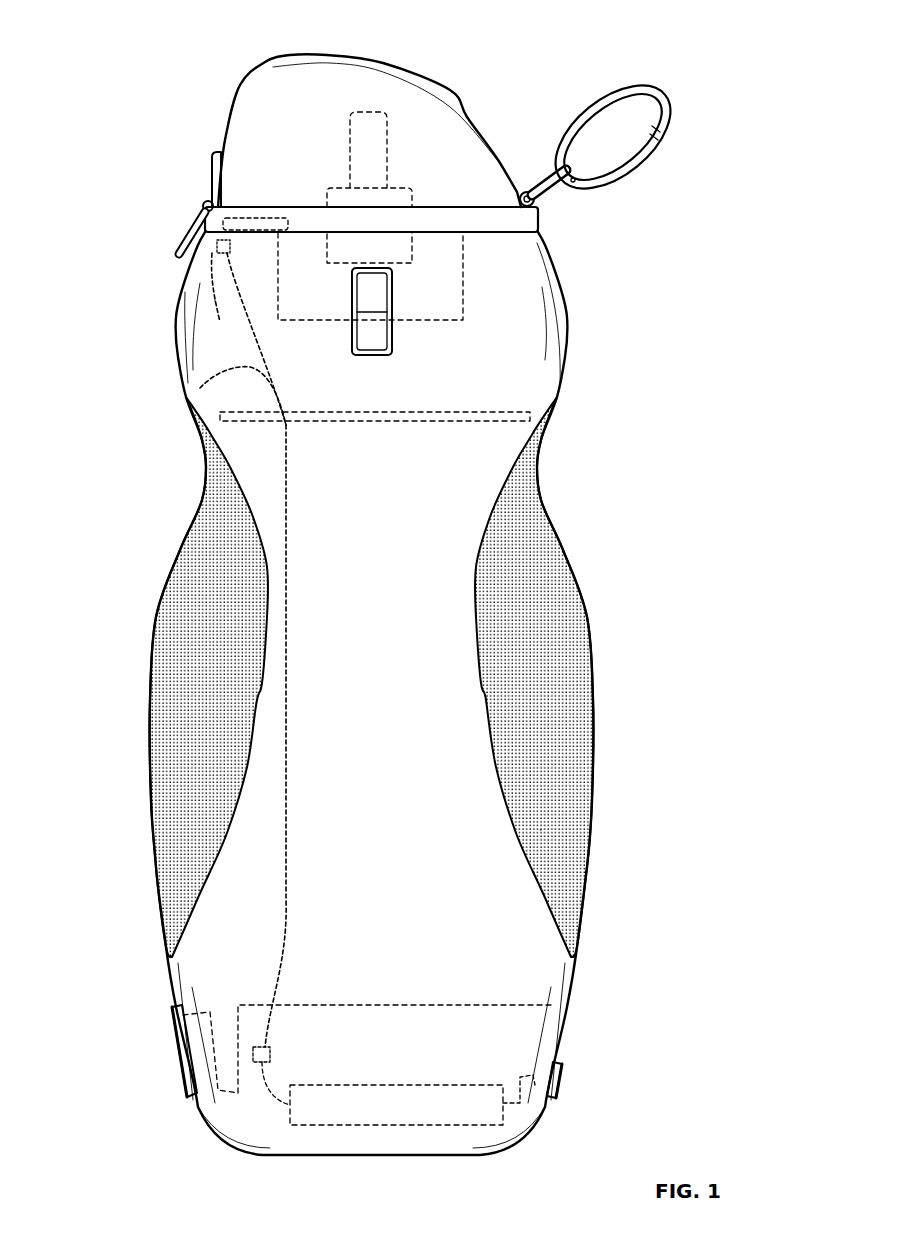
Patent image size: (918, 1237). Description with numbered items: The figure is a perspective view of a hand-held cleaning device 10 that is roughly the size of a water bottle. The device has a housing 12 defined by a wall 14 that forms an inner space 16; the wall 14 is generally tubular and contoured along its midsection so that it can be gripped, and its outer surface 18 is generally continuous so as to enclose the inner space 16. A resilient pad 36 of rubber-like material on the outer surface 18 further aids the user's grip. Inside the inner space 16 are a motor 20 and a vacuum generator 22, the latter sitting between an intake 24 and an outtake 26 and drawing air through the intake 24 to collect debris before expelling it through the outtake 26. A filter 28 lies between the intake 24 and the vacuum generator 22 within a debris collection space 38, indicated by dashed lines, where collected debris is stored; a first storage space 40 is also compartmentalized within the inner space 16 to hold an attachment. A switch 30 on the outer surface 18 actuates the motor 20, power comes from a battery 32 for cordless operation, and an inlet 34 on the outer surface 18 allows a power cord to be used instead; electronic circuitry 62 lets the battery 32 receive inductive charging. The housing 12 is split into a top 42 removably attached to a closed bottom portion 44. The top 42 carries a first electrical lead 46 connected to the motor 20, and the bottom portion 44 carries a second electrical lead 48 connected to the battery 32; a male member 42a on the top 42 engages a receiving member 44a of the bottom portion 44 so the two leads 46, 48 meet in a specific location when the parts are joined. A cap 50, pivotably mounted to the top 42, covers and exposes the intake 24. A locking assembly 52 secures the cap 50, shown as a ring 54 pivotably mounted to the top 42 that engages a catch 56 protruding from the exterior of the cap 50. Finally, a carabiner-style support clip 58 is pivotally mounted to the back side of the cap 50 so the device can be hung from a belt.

The hand-held cleaning device 10 is at (541, 60).
The housing 12 is at (658, 405).
The wall 14 is at (568, 283).
The inner space 16 is at (522, 378).
The outer surface 18 is at (458, 378).
The motor 20 is at (450, 268).
The vacuum generator 22 is at (386, 258).
The intake 24 is at (375, 133).
The outtake 26 is at (173, 1043).
The filter 28 is at (394, 423).
The switch 30 is at (352, 337).
The battery 32 is at (390, 1092).
The inlet 34 is at (563, 1077).
The resilient pad 36 is at (577, 647).
The debris collection space 38 is at (490, 842).
The first storage space 40 is at (532, 1017).
The top 42 is at (521, 121).
The male member 42a is at (222, 213).
The bottom portion 44 is at (630, 972).
The receiving member 44a is at (245, 650).
The first electrical lead 46 is at (263, 213).
The second electrical lead 48 is at (200, 388).
The cap 50 is at (398, 66).
The locking assembly 52 is at (148, 209).
The ring 54 is at (178, 238).
The catch 56 is at (212, 178).
The support clip 58 is at (650, 100).
The electronic circuitry 62 is at (272, 1055).